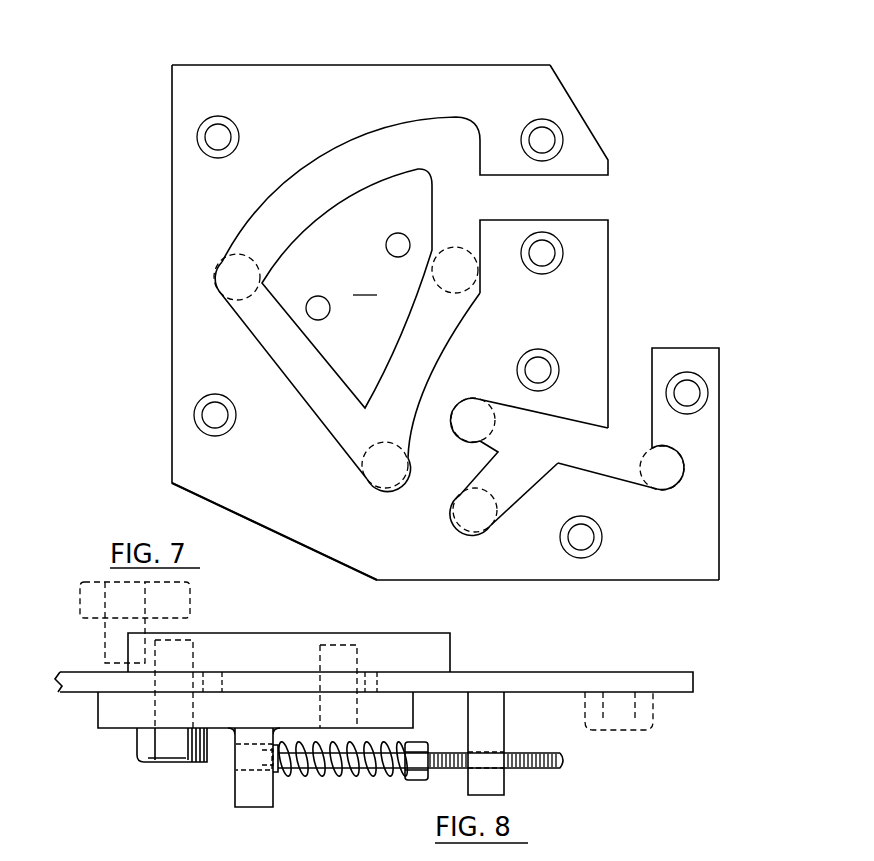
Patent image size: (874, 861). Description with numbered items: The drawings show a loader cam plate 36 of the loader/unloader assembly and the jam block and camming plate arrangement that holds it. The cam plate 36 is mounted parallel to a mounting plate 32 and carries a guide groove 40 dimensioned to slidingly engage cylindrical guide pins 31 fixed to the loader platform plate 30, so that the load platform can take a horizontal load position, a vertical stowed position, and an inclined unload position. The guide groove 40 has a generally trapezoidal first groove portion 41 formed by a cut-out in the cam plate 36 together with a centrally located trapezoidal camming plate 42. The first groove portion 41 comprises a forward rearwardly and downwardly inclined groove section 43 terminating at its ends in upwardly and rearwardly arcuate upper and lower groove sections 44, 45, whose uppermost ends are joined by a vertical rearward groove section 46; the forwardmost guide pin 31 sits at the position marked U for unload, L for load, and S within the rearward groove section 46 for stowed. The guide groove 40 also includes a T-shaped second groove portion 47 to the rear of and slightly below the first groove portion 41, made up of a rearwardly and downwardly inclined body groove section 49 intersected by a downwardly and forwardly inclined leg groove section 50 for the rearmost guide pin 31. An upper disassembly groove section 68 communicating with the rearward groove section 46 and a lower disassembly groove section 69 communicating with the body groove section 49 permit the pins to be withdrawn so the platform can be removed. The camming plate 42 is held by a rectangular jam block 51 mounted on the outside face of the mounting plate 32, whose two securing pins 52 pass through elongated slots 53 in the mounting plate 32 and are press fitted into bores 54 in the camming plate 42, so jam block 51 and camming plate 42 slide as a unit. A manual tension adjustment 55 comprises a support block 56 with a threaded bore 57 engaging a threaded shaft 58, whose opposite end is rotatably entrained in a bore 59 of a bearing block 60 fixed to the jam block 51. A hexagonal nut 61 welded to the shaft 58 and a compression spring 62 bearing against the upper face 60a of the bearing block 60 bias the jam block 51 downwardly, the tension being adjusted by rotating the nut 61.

In FIG. 8, the loader platform plate 30 is at (87, 580).
In FIG. 8, the guide pins 31 is at (105, 643).
In FIG. 8, the mounting plate 32 is at (535, 672).
In FIG. 7, the loader cam plate 36 is at (166, 344).
In FIG. 7, the guide groove 40 is at (300, 253).
In FIG. 7, the first groove portion 41 is at (352, 148).
In FIG. 7, the camming plate 42 is at (347, 288).
In FIG. 8, the camming plate 42 is at (443, 655).
In FIG. 7, the forward groove section 43 is at (300, 378).
In FIG. 7, the upper groove section 44 is at (275, 203).
In FIG. 7, the lower groove section 45 is at (427, 355).
In FIG. 7, the rearward groove section 46 is at (460, 172).
In FIG. 7, the second groove portion 47 is at (572, 418).
In FIG. 7, the body groove section 49 is at (563, 423).
In FIG. 7, the leg groove section 50 is at (515, 487).
In FIG. 8, the jam block 51 is at (112, 703).
In FIG. 8, the securing pins 52 is at (205, 670).
In FIG. 8, the slots 53 is at (222, 678).
In FIG. 7, the bores 54 is at (398, 232).
In FIG. 8, the bores 54 is at (196, 638).
In FIG. 8, the tension adjustment 55 is at (446, 770).
In FIG. 8, the support block 56 is at (519, 748).
In FIG. 8, the threaded bore 57 is at (480, 768).
In FIG. 8, the threaded shaft 58 is at (560, 758).
In FIG. 8, the bore 59 is at (243, 757).
In FIG. 8, the bearing block 60 is at (229, 789).
In FIG. 8, the upper face 60a is at (274, 790).
In FIG. 8, the hexagonal nut 61 is at (417, 745).
In FIG. 8, the compression spring 62 is at (300, 773).
In FIG. 7, the upper disassembly groove section 68 is at (562, 183).
In FIG. 7, the lower disassembly groove section 69 is at (633, 383).